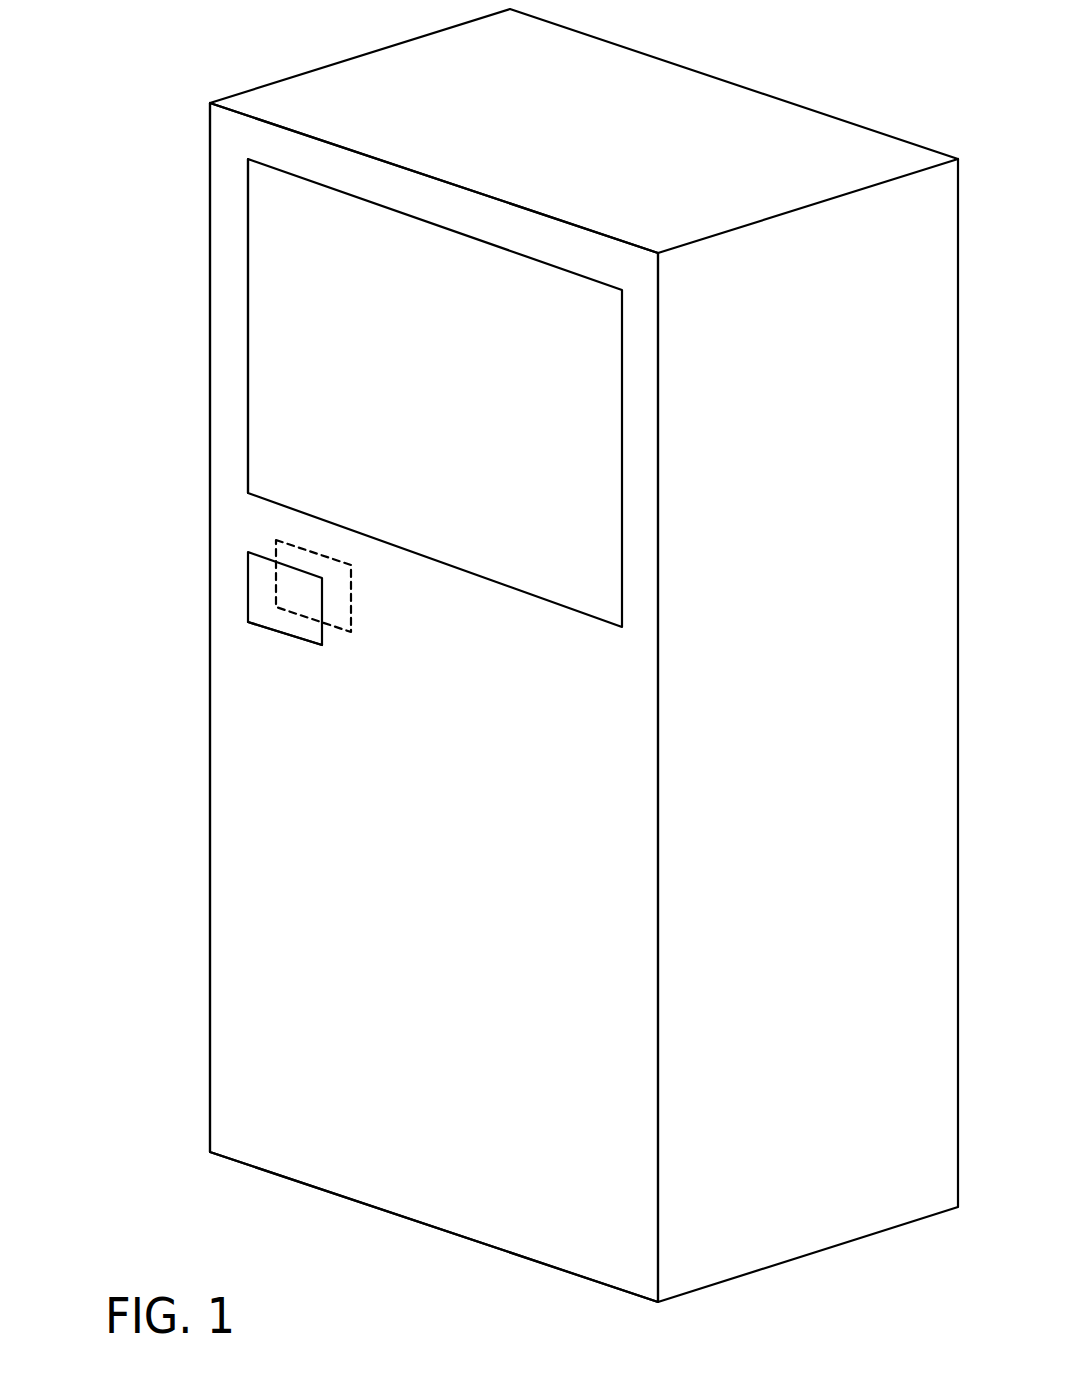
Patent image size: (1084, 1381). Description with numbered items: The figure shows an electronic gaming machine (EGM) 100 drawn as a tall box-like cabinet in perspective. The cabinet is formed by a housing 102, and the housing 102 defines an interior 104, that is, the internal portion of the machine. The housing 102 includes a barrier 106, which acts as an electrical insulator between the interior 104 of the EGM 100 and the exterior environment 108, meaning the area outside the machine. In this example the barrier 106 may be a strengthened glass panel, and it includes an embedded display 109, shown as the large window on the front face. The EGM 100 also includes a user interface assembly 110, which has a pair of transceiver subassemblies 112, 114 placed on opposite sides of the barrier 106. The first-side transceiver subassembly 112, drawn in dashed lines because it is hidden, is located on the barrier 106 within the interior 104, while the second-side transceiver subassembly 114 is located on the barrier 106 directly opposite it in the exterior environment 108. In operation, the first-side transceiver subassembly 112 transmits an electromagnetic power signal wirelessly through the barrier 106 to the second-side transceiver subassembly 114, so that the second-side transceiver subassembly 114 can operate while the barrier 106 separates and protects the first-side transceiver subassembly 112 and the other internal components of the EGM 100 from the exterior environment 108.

The electronic gaming machine 100 is at (140, 58).
The housing 102 is at (210, 888).
The interior 104 is at (438, 625).
The barrier 106 is at (265, 589).
The exterior environment 108 is at (116, 758).
The embedded display 109 is at (248, 327).
The user interface assembly 110 is at (205, 567).
The first-side transceiver subassembly 112 is at (337, 632).
The second-side transceiver subassembly 114 is at (270, 629).